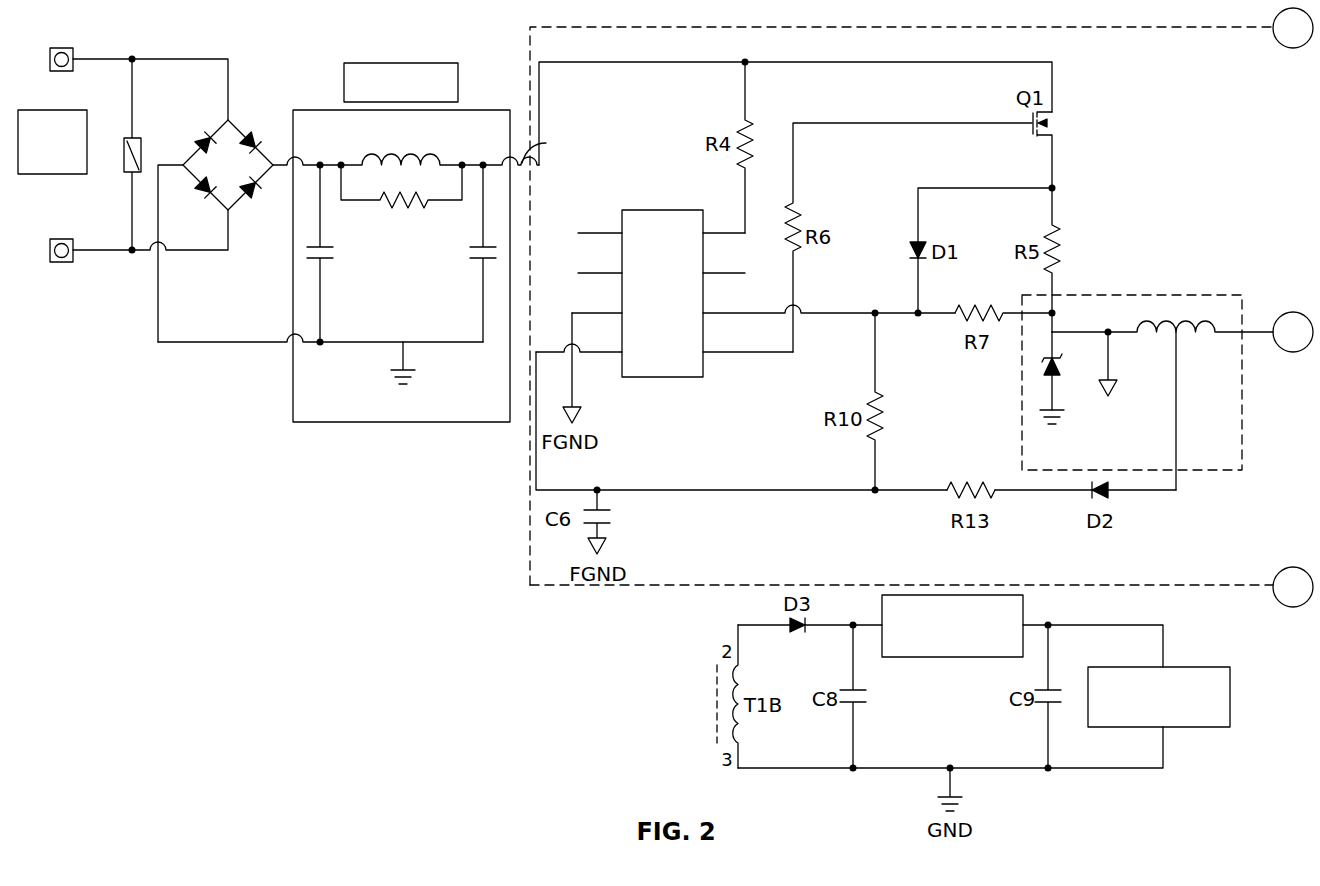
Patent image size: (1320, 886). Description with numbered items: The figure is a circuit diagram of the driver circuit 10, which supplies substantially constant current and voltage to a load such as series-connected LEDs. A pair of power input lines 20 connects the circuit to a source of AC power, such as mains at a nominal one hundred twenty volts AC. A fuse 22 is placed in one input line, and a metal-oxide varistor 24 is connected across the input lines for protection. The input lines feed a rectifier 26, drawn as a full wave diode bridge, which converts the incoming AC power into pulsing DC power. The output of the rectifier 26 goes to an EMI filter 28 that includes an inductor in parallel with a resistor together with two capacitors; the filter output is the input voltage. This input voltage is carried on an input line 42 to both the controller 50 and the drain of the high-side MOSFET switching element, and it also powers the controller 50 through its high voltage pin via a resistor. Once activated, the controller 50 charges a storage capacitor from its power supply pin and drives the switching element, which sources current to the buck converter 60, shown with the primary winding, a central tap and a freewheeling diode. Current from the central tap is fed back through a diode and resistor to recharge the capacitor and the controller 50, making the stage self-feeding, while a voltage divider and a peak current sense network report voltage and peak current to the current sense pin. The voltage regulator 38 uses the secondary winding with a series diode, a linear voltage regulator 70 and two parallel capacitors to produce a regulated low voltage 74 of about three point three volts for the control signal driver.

The driver circuit 10 is at (533, 625).
The power input lines 20 is at (62, 48).
The fuse 22 is at (118, 60).
The metal-oxide varistor (MOV) 24 is at (140, 139).
The rectifier 26 is at (253, 107).
The EMI filter 28 is at (482, 110).
The voltage regulator 38 is at (1168, 626).
The input line 42 is at (744, 60).
The controller 50 is at (665, 210).
The buck converter 60 is at (1198, 293).
The linear voltage regulator 70 is at (1025, 617).
The regulated low voltage 74 is at (1232, 697).